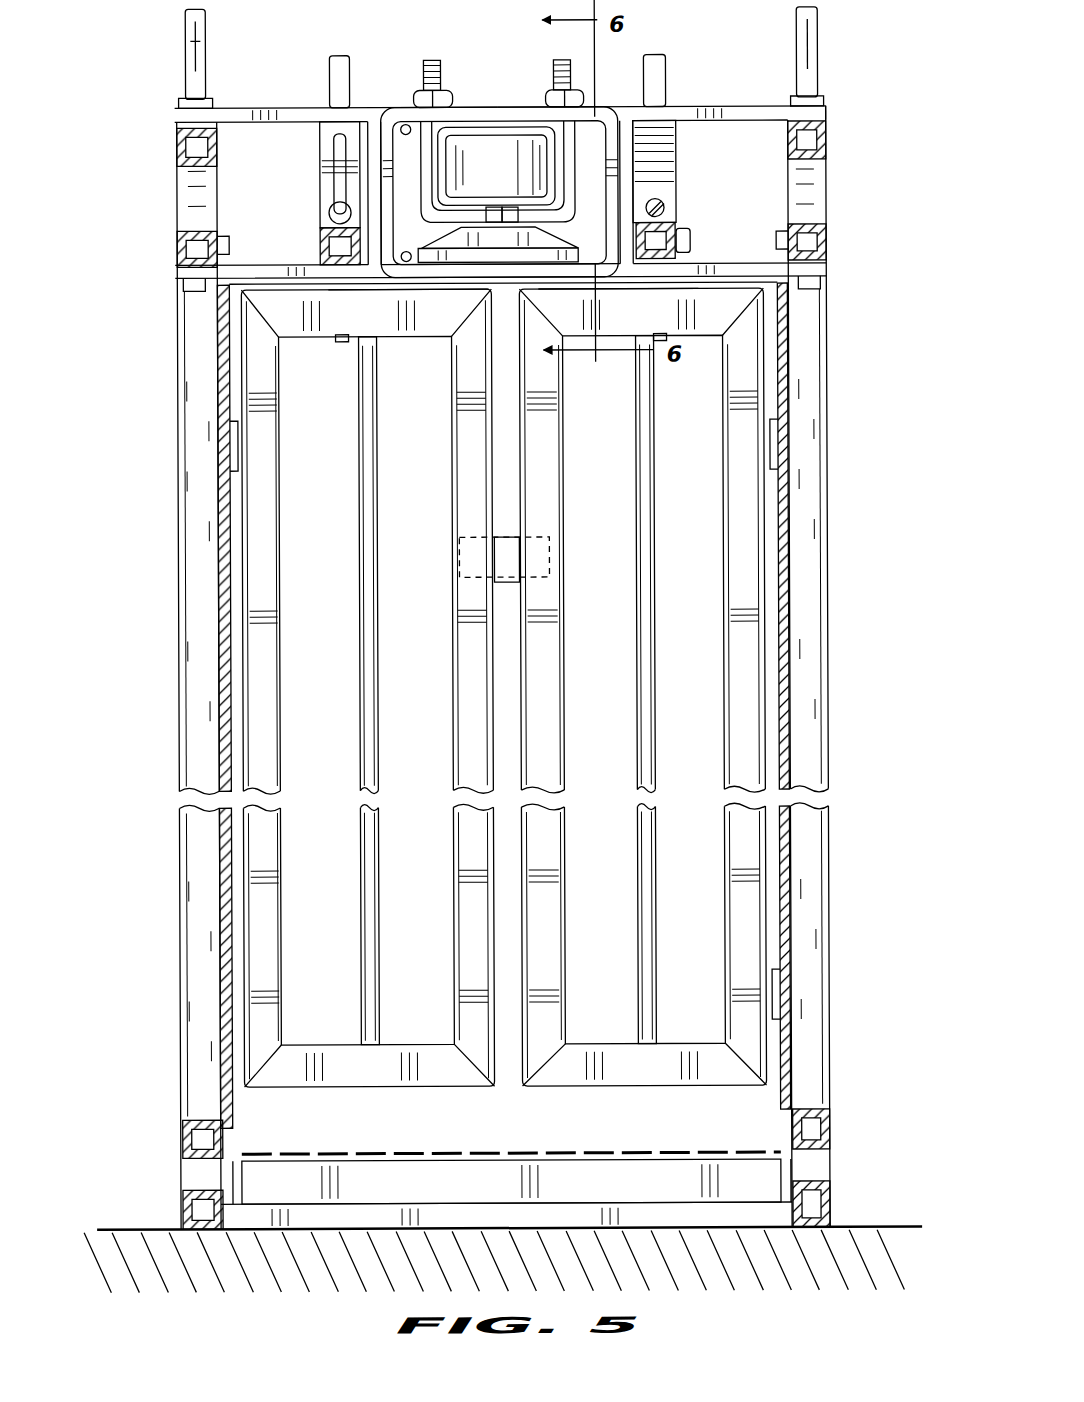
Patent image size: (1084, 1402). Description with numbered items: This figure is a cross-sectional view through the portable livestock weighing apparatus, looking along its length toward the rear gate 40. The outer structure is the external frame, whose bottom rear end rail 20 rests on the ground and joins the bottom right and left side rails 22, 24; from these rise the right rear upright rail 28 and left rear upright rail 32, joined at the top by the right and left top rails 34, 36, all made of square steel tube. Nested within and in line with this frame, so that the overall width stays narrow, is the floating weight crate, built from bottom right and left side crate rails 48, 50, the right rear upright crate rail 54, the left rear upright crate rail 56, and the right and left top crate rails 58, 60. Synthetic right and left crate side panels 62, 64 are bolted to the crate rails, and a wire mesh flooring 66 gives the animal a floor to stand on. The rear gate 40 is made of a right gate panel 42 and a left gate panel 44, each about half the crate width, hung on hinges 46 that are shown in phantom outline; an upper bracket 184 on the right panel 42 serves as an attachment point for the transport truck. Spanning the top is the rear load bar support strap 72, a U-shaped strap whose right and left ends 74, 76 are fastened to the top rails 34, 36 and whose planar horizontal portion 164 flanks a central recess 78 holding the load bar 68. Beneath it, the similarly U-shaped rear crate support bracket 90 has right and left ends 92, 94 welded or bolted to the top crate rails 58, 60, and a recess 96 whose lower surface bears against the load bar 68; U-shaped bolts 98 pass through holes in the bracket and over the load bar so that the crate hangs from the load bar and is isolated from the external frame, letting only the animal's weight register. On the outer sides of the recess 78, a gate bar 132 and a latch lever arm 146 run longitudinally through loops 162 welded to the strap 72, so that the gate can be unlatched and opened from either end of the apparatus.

The bottom rear end rail 20 is at (755, 1215).
The bottom right side rail 22 is at (815, 1180).
The bottom left side rail 24 is at (185, 1200).
The right rear upright rail 28 is at (812, 210).
The left rear upright rail 32 is at (178, 205).
The right top rail 34 is at (830, 143).
The left top rail 36 is at (178, 145).
The rear gate 40 is at (748, 702).
The right gate panel 42 is at (665, 1090).
The left gate panel 44 is at (305, 1093).
The hinges 46 is at (195, 490).
The bottom right side crate rail 48 is at (815, 1108).
The bottom left side crate rail 50 is at (190, 1135).
The right rear upright crate rail 54 is at (815, 520).
The left rear upright crate rail 56 is at (179, 740).
The right top crate rail 58 is at (830, 245).
The left top crate rail 60 is at (178, 250).
The right crate side panel 62 is at (790, 610).
The left crate side panel 64 is at (225, 600).
The wire mesh flooring 66 is at (535, 1150).
The load bar 68 is at (510, 138).
The rear load bar support strap 72 is at (765, 100).
The right end 74 is at (830, 112).
The left end 76 is at (177, 110).
The recess 78 is at (400, 270).
The rear crate support bracket 90 is at (490, 100).
The right end 92 is at (830, 265).
The left end 94 is at (179, 285).
The recess 96 is at (405, 125).
The U-shaped bolts 98 is at (430, 60).
The gate bar 132 is at (322, 232).
The latch lever arm 146 is at (663, 203).
The loops 162 is at (320, 250).
The horizontal portion 164 is at (288, 107).
The upper bracket 184 is at (500, 537).